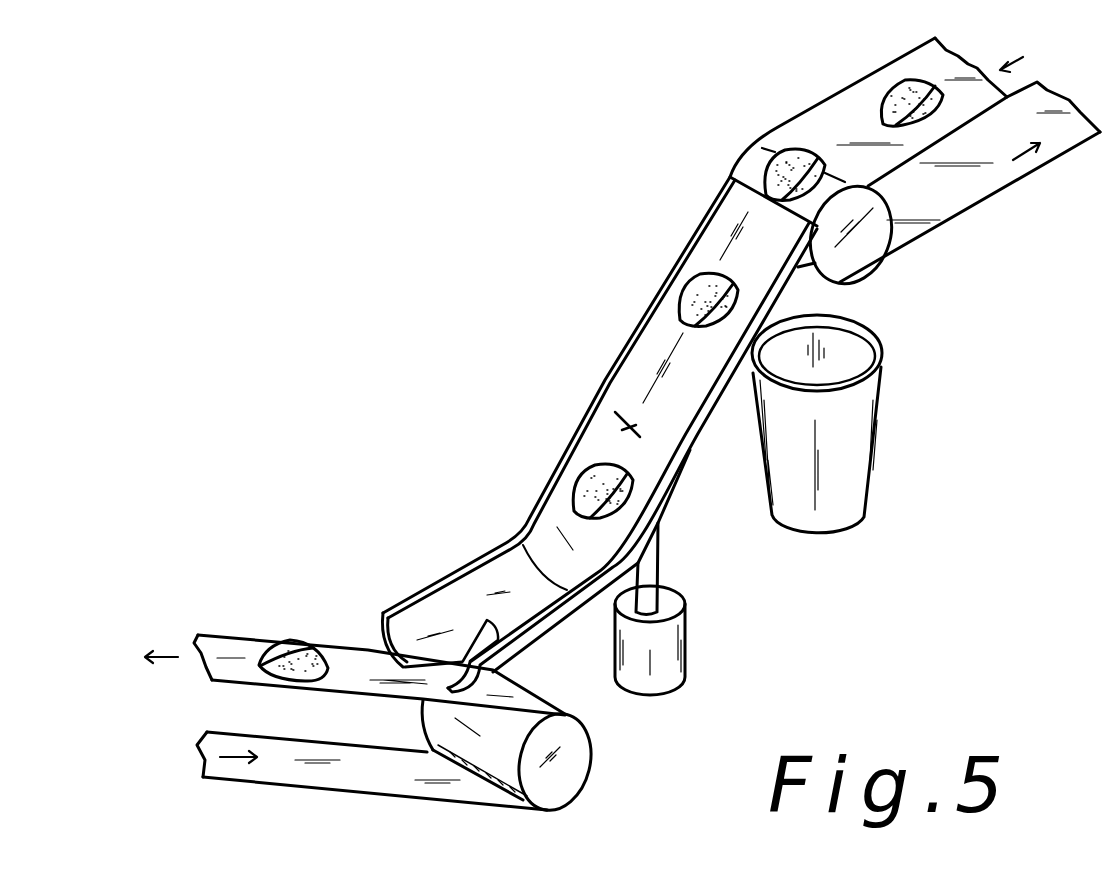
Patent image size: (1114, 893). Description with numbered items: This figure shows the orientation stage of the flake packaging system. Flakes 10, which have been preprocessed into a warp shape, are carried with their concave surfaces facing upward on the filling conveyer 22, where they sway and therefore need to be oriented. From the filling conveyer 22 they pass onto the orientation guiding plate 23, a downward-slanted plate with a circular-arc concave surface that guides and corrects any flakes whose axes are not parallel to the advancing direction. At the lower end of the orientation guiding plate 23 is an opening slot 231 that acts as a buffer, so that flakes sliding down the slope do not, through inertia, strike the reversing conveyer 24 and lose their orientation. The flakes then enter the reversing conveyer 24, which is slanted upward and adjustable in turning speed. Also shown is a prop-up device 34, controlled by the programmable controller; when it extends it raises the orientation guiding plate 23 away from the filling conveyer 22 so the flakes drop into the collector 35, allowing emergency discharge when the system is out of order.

The flakes 10 is at (900, 93).
The filling conveyer 22 is at (843, 130).
The orientation guiding plate 23 is at (643, 387).
The opening slot 231 is at (478, 640).
The reversing conveyer 24 is at (352, 668).
The prop-up device 34 is at (650, 570).
The collector 35 is at (855, 428).